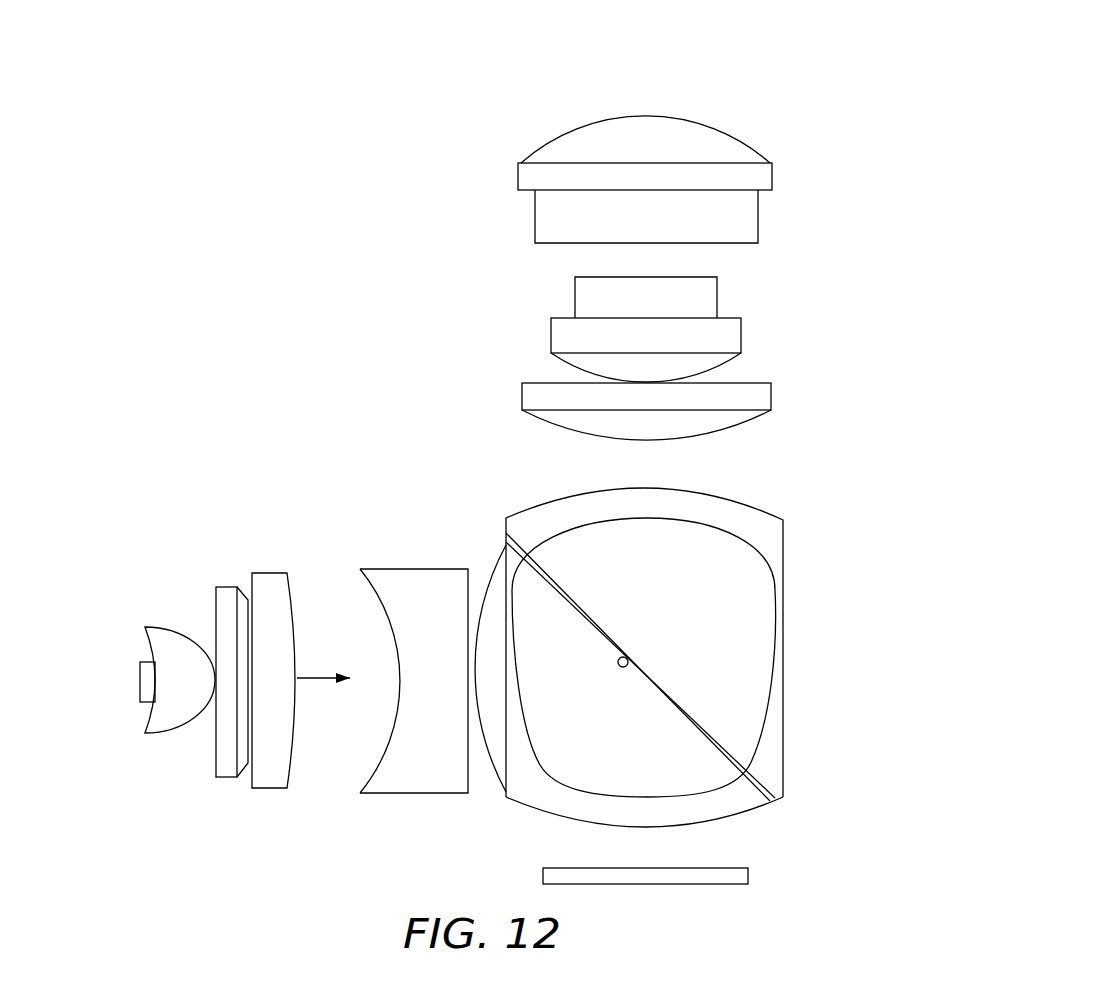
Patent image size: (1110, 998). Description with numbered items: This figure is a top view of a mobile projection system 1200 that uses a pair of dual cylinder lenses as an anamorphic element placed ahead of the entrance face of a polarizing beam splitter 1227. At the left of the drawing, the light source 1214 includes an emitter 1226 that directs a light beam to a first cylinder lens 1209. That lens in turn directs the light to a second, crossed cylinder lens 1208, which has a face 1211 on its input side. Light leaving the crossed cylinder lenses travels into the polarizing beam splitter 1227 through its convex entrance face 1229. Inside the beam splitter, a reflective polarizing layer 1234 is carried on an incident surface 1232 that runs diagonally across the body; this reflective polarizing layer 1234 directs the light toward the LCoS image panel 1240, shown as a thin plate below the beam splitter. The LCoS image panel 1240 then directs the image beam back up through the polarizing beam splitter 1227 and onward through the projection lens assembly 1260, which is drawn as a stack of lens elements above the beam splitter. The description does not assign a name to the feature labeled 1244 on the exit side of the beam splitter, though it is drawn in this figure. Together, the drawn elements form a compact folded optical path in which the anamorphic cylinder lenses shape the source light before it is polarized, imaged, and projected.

The mobile projection system 1200 is at (730, 67).
The projection lens assembly 1260 is at (783, 118).
The light source 1214 is at (303, 563).
The emitter 1226 is at (140, 682).
The cylinder lens 1209 is at (295, 727).
The second, crossed cylinder lens 1208 is at (397, 568).
The face 1211 is at (390, 622).
The polarizing beam splitter 1227 is at (753, 507).
The exit surface 1244 is at (720, 817).
The convex entrance face 1229 is at (495, 767).
The reflective polarizing layer 1234 is at (670, 695).
The incident surface 1232 is at (630, 662).
The LCoS image panel 1240 is at (748, 876).